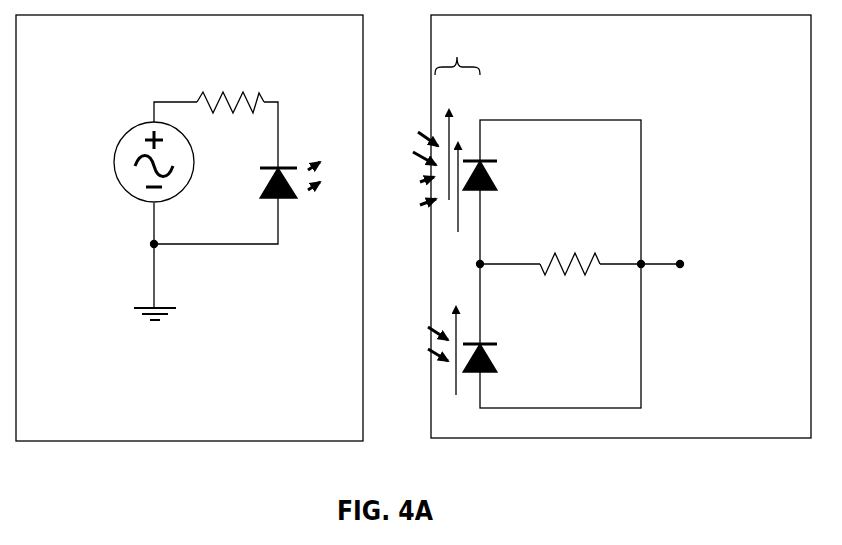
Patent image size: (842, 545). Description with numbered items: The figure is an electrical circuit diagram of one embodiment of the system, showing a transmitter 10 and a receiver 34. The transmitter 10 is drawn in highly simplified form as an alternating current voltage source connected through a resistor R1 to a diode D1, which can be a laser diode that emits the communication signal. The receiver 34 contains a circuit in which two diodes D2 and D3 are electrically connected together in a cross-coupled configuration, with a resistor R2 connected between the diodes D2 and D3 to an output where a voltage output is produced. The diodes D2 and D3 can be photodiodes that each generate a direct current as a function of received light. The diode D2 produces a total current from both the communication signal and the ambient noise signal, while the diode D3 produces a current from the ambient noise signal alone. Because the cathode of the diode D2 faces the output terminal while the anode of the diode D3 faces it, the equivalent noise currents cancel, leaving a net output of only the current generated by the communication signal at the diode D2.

The transmitter 10 is at (189, 247).
The receiver 34 is at (598, 255).
The resistor R1 is at (230, 91).
The diode D1 is at (270, 180).
The resistor R2 is at (570, 253).
The diode D2 is at (502, 175).
The diode D3 is at (502, 358).